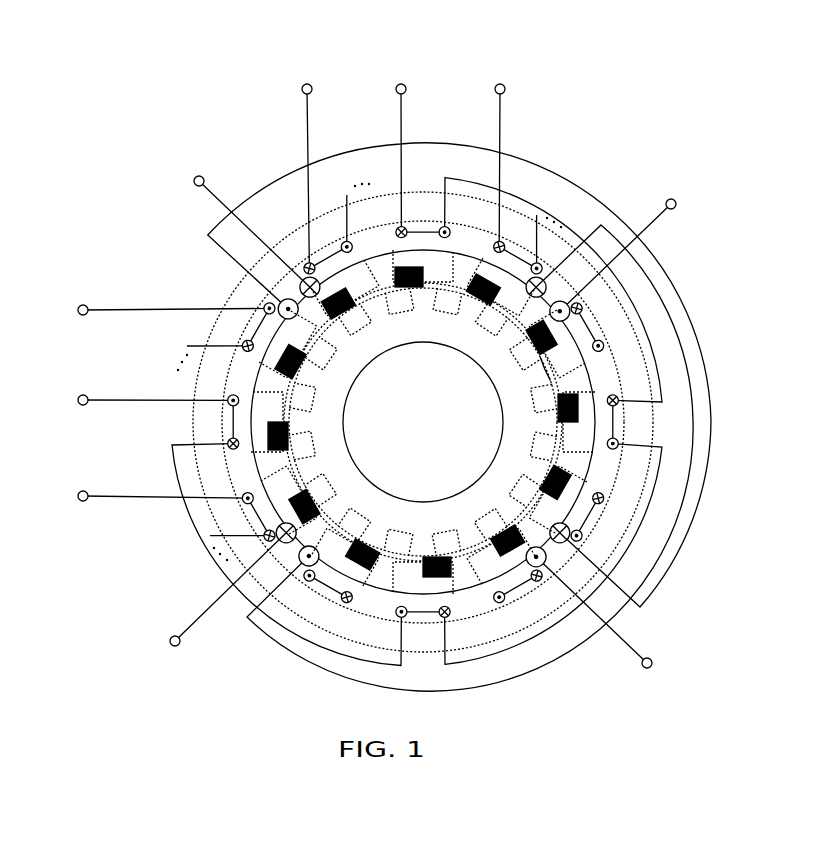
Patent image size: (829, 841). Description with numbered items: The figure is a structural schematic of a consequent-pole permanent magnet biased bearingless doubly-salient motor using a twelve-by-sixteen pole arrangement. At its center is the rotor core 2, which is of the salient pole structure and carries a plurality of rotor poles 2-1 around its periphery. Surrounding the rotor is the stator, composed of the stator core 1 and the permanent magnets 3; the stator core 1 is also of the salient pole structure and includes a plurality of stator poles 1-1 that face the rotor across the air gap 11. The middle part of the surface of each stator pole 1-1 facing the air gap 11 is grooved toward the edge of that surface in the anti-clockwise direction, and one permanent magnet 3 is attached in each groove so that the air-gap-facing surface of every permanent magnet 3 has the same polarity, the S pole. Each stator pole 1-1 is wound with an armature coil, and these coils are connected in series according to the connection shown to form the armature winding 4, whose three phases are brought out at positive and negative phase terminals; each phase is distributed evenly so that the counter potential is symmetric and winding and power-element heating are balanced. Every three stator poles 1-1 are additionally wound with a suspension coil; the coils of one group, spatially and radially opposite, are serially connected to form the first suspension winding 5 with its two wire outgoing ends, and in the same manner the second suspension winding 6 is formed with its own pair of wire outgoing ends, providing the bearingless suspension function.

The stator core 1 is at (230, 292).
The stator pole 1-1 is at (280, 342).
The rotor core 2 is at (365, 352).
The rotor pole 2-1 is at (583, 380).
The permanent magnet 3 is at (290, 447).
The armature winding 4 is at (404, 128).
The first suspension winding 5 is at (200, 613).
The second suspension winding 6 is at (222, 195).
The air gap 11 is at (583, 380).